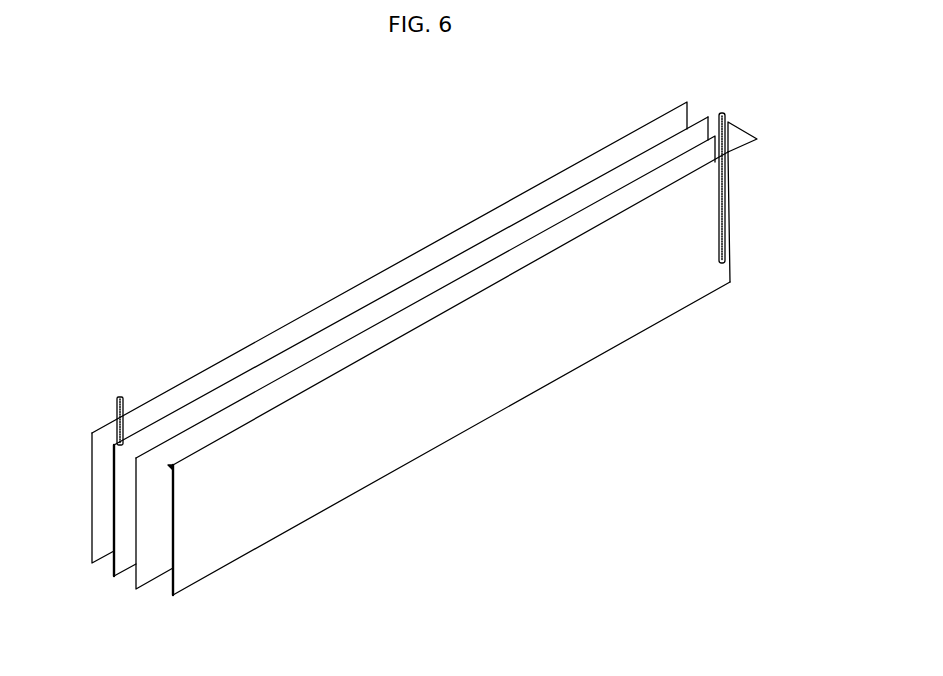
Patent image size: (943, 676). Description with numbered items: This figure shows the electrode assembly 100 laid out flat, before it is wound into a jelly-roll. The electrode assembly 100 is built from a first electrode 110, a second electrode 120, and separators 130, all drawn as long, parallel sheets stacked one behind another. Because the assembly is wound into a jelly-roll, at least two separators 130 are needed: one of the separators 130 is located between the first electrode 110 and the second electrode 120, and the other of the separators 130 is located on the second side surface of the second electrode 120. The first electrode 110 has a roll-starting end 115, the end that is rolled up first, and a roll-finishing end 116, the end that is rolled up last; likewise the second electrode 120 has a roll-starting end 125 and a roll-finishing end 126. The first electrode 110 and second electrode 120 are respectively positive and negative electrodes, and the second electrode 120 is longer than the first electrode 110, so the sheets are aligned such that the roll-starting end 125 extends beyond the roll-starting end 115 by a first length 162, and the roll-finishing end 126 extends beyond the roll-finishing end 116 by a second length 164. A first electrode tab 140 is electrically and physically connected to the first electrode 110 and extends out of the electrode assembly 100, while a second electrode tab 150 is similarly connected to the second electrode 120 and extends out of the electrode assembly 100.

The electrode assembly 100 is at (170, 229).
The first electrode 110 is at (463, 303).
The roll-starting end 115 is at (166, 469).
The roll-finishing end 116 is at (730, 187).
The second electrode 120 is at (383, 296).
The roll-starting end 125 is at (114, 456).
The roll-finishing end 126 is at (711, 118).
The separator 130 is at (346, 292).
The first electrode tab 140 is at (723, 113).
The second electrode tab 150 is at (120, 397).
The first length 162 is at (175, 468).
The second length 164 is at (757, 140).